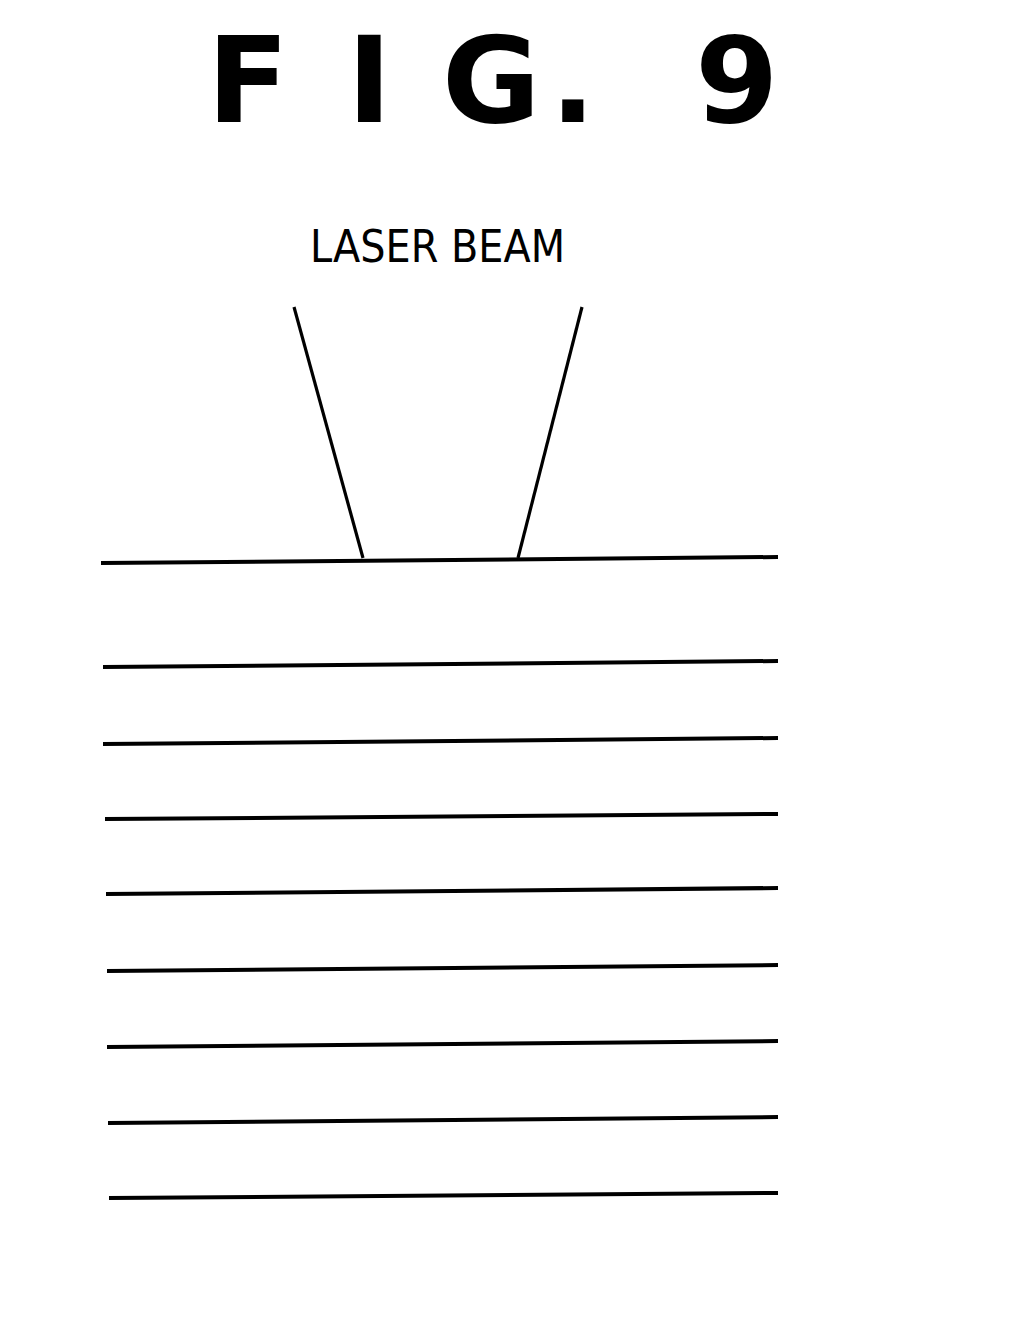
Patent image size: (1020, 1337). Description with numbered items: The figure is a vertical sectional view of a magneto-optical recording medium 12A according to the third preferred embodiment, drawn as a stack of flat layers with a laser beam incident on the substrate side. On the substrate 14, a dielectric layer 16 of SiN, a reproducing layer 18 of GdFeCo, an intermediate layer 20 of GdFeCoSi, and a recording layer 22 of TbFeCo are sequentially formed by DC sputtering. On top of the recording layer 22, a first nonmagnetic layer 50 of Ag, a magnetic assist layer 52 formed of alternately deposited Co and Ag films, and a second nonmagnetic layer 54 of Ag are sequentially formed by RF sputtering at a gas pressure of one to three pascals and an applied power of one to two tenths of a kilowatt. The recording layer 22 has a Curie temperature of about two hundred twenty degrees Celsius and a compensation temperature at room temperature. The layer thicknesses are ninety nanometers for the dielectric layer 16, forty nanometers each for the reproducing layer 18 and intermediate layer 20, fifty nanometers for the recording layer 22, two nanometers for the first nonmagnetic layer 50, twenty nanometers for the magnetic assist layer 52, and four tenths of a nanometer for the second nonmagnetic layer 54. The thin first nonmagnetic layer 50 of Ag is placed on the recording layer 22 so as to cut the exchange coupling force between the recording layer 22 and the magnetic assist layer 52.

The magneto-optical recording medium 12A is at (631, 550).
The substrate 14 is at (756, 611).
The dielectric layer 16 is at (756, 700).
The reproducing layer 18 is at (756, 780).
The intermediate layer 20 is at (756, 862).
The recording layer 22 is at (756, 941).
The first nonmagnetic layer 50 is at (758, 1021).
The magnetic assist layer 52 is at (758, 1101).
The second nonmagnetic layer 54 is at (760, 1182).